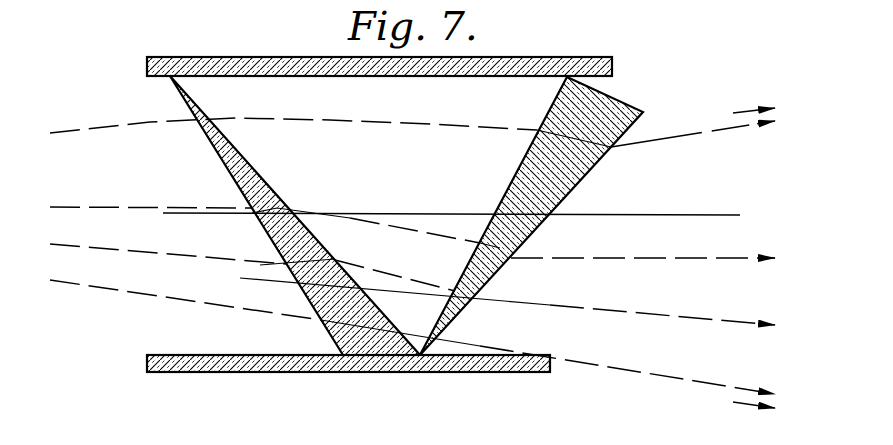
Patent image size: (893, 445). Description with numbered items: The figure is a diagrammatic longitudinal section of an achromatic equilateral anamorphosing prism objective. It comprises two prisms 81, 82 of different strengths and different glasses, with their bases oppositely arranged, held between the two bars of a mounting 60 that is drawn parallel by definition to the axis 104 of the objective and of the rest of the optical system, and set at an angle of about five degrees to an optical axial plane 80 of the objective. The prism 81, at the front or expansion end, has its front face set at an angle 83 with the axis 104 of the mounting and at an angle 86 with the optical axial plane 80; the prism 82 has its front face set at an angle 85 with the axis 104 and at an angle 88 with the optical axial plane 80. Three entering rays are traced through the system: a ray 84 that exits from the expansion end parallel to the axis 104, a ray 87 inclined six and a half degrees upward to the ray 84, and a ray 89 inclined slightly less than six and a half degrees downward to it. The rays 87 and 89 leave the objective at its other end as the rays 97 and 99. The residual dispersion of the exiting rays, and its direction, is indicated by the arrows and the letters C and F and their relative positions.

The mounting 60 is at (612, 66).
The optical axial plane 80 is at (285, 279).
The prism 81 is at (531, 216).
The prism 82 is at (295, 215).
The angle 83 is at (616, 215).
The ray 84 is at (90, 207).
The angle 85 is at (351, 215).
The angle 86 is at (509, 261).
The ray 87 is at (82, 129).
The angle 88 is at (422, 296).
The ray 89 is at (88, 284).
The exiting ray 97 is at (728, 133).
The exiting ray 99 is at (720, 383).
The axis 104 is at (178, 214).